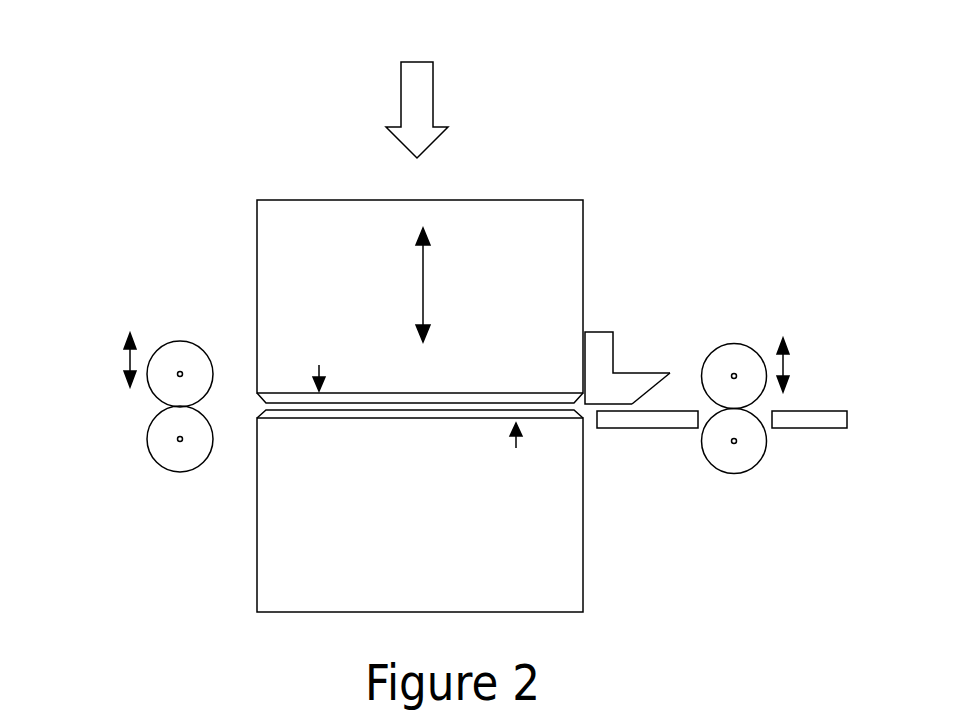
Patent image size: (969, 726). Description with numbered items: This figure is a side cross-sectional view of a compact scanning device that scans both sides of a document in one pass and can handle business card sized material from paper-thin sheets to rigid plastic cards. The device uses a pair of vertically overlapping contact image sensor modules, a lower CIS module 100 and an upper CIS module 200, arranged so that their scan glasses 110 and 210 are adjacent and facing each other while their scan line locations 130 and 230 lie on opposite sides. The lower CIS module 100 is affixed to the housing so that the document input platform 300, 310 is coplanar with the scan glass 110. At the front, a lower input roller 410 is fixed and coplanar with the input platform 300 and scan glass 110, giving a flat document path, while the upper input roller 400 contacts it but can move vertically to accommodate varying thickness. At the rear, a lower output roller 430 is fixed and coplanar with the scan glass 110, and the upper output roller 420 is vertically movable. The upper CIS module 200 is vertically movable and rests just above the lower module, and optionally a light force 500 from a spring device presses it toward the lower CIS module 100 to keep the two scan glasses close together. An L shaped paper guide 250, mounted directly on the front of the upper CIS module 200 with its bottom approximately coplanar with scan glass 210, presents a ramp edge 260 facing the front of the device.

The lower CIS module 100 is at (272, 587).
The scan glass 110 is at (340, 412).
The scan line location 130 is at (520, 443).
The upper CIS module 200 is at (275, 225).
The scan glass 210 is at (390, 400).
The scan line location 230 is at (312, 371).
The paper guide 250 is at (602, 358).
The ramp edge 260 is at (643, 388).
The document input platform 300 is at (623, 422).
The document input platform 310 is at (786, 423).
The upper input roller 400 is at (731, 355).
The lower input roller 410 is at (726, 462).
The upper output roller 420 is at (185, 353).
The lower output roller 430 is at (168, 455).
The light force 500 is at (413, 73).